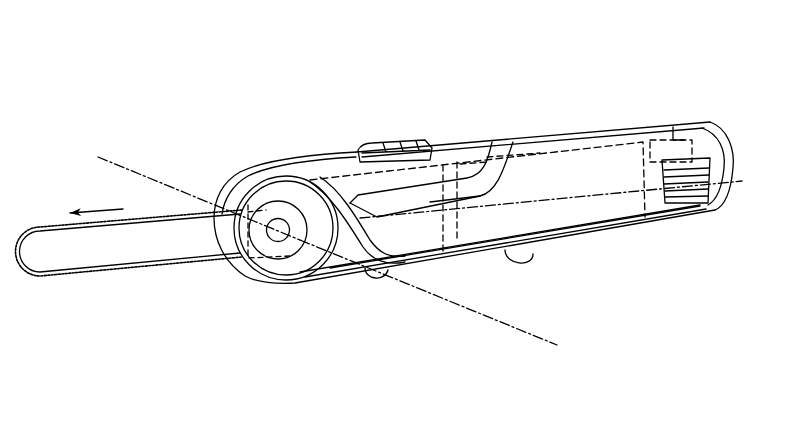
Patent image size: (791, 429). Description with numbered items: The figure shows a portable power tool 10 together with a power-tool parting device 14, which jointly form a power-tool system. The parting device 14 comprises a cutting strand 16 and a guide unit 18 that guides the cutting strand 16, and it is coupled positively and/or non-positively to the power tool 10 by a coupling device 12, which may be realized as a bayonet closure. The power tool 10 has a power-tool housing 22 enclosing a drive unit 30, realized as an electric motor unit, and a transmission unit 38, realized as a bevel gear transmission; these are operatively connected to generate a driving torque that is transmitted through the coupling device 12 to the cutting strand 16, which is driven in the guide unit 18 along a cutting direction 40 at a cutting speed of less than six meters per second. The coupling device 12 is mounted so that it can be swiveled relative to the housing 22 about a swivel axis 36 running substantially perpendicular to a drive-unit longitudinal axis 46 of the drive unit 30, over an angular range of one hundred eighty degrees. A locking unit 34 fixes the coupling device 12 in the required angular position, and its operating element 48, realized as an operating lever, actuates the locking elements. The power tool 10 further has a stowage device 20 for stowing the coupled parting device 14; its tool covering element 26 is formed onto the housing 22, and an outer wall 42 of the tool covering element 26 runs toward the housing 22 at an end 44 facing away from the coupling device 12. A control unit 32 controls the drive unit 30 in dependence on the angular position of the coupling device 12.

The portable power tool 10 is at (634, 81).
The coupling device 12 is at (246, 144).
The power-tool parting device 14 is at (61, 296).
The cutting strand 16 is at (90, 270).
The guide unit 18 is at (158, 254).
The stowage device 20 is at (626, 270).
The power-tool housing 22 is at (548, 130).
The tool covering element 26 is at (422, 225).
The drive unit 30 is at (597, 242).
The open-loop and/or closed-loop control unit 32 is at (675, 125).
The locking unit 34 is at (464, 322).
The swivel axis 36 is at (102, 155).
The transmission unit 38 is at (288, 262).
The cutting direction 40 is at (100, 207).
The outer wall 42 is at (393, 227).
The end of the power-tool housing 44 is at (737, 208).
The drive-unit longitudinal axis 46 is at (742, 178).
The operating element 48 is at (512, 268).